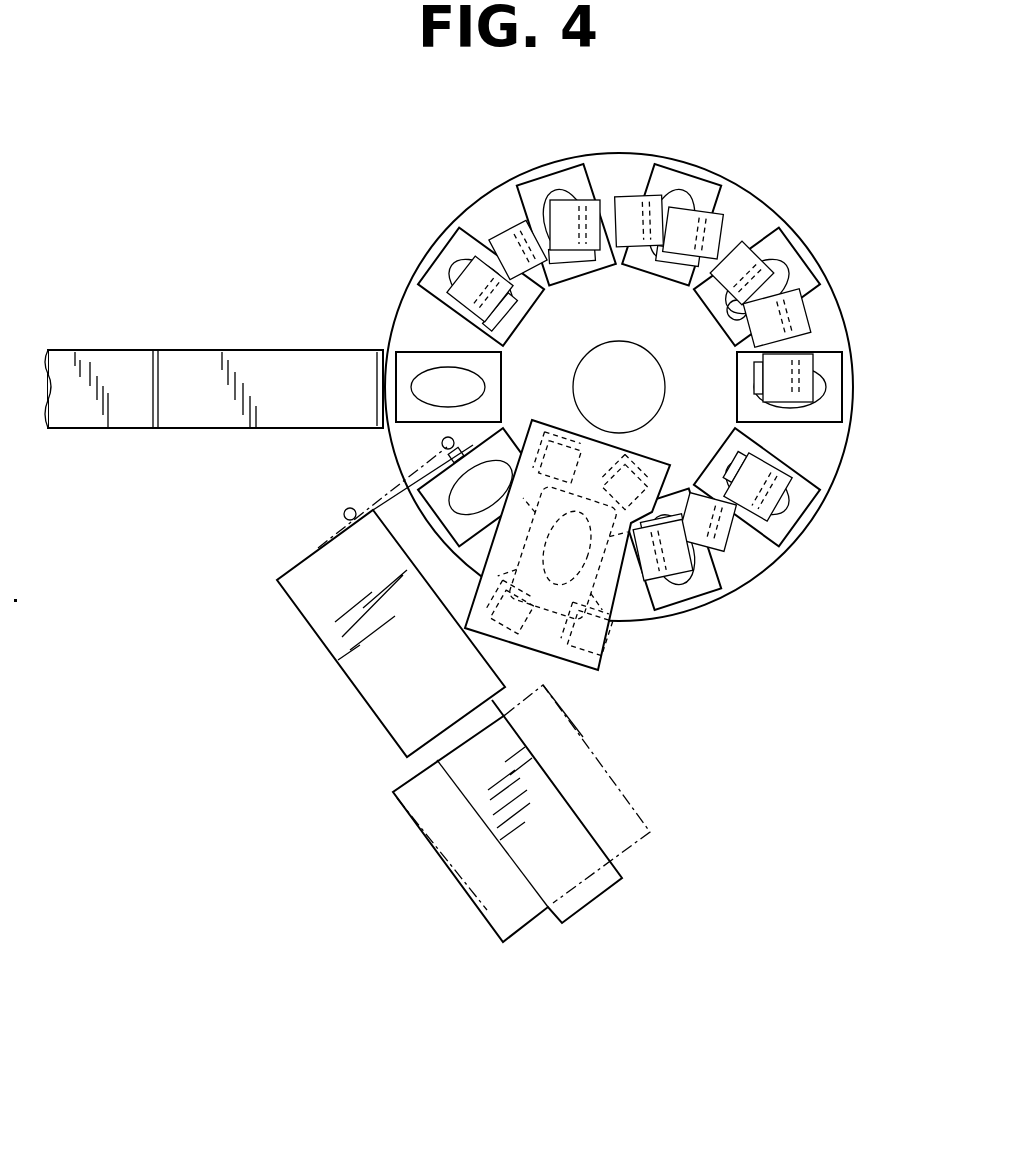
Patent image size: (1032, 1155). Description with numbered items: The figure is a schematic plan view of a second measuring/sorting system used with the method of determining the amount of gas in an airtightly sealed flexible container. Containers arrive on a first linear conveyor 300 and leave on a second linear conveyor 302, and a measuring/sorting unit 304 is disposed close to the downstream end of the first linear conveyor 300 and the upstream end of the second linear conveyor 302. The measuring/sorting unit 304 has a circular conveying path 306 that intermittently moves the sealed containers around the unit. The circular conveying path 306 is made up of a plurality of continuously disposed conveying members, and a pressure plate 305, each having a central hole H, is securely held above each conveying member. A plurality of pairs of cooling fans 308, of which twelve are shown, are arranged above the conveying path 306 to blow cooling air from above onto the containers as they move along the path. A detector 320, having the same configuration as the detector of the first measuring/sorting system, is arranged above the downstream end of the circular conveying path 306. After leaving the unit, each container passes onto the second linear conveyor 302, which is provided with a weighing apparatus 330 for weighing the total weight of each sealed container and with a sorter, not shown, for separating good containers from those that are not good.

The first linear conveyor 300 is at (128, 428).
The second linear conveyor 302 is at (580, 838).
The measuring/sorting unit 304 is at (632, 152).
The pressure plate 305 is at (470, 262).
The circular conveying path 306 is at (749, 212).
The cooling fan 308 is at (745, 548).
The detector 320 is at (600, 673).
The weighing apparatus 330 is at (488, 912).
The central hole H is at (438, 400).